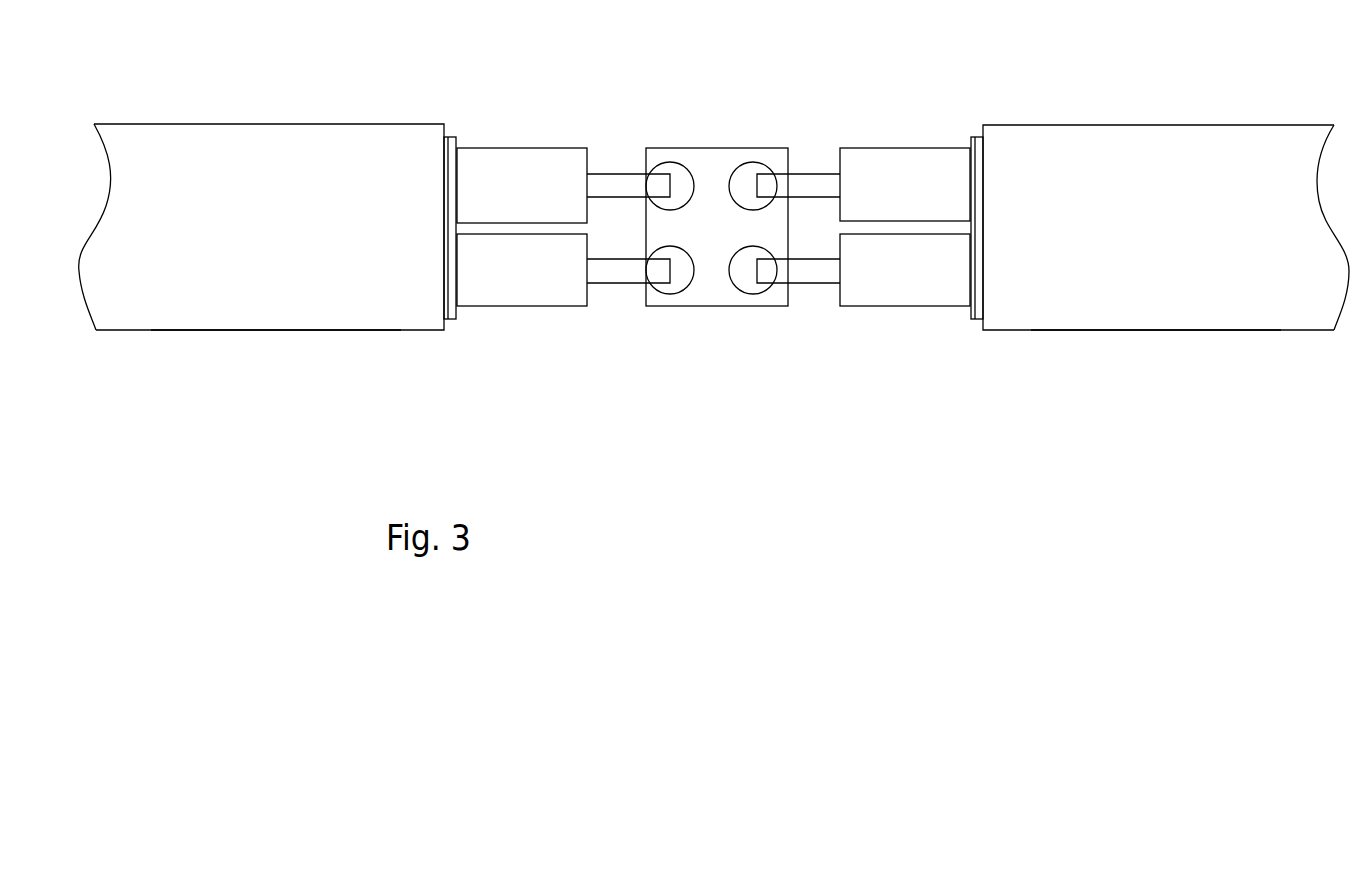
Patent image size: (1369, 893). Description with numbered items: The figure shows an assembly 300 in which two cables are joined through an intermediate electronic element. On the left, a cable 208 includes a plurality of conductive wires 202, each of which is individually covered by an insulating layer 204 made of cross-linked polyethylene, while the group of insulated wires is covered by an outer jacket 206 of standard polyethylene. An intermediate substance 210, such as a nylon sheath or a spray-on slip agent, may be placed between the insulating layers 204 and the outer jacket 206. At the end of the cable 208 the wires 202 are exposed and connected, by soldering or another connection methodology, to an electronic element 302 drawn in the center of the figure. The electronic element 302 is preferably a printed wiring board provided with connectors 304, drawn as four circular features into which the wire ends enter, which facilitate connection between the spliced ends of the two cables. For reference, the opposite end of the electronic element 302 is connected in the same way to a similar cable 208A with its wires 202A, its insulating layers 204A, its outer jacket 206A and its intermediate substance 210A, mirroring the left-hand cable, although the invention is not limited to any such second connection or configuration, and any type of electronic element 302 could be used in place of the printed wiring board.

The conductive wires 202 is at (611, 185).
The wires 202A is at (817, 185).
The insulating layer 204 is at (542, 177).
The insulating layer 204A is at (885, 177).
The outer jacket 206 is at (313, 172).
The outer jacket 206A is at (1112, 172).
The cable 208 is at (232, 361).
The cable 208A is at (1195, 361).
The intermediate substance 210 is at (457, 320).
The intermediate substance 210A is at (970, 318).
The assembly 300 is at (681, 396).
The electronic element 302 is at (704, 270).
The connectors 304 is at (740, 272).